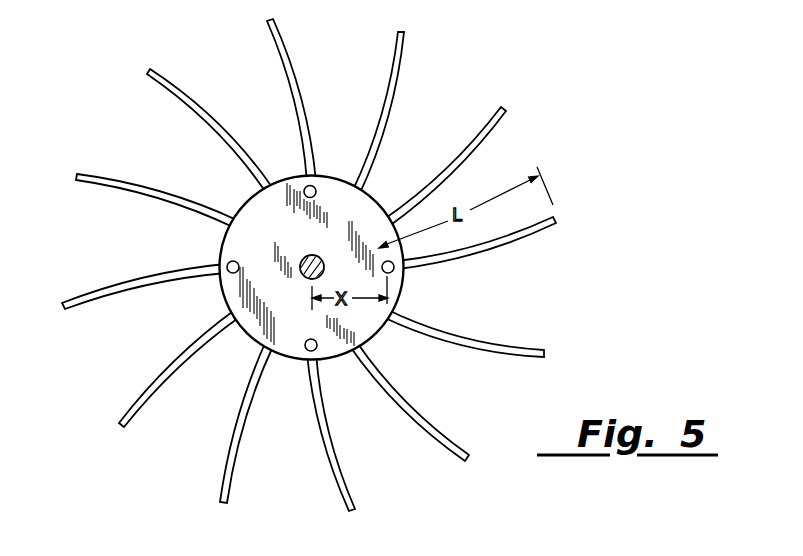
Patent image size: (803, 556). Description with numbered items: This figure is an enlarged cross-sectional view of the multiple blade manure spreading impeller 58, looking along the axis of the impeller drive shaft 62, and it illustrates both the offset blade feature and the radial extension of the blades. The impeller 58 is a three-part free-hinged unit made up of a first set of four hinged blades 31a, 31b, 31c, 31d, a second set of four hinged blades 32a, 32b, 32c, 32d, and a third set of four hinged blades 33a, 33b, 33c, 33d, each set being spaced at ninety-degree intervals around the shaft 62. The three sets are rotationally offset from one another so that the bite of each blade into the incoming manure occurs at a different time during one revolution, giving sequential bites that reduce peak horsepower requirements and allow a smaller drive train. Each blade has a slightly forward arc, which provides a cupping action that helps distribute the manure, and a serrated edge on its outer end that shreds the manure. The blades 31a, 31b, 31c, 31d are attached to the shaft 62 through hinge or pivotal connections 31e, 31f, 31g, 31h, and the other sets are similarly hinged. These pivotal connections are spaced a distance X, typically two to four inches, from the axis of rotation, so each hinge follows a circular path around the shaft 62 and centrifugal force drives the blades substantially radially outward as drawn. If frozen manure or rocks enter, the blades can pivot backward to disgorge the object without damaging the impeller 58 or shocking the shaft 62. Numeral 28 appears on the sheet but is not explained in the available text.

The hinged blade of first set 31a is at (277, 28).
The hinged blade of second set 32a is at (159, 72).
The hinged blade of third set 33a is at (112, 174).
The hinged blade of first set 31b is at (87, 288).
The hinged blade of second set 32b is at (126, 410).
The hinged blade of third set 33b is at (222, 476).
The hinged blade of first set 31c is at (335, 483).
The hinged blade of second set 32c is at (447, 456).
The hinged blade of third set 33c is at (518, 360).
The hinged blade of first set 31d is at (543, 224).
The hinged blade of second set 32d is at (505, 117).
The hinged blade of third set 33d is at (406, 54).
The hinge or pivotal connection 31e is at (317, 188).
The hinge or pivotal connection 31f is at (229, 262).
The hinge or pivotal connection 31g is at (305, 349).
The hinge or pivotal connection 31h is at (404, 281).
The impeller drive shaft 62 is at (305, 256).
The manure spreading impeller 58 is at (567, 20).
The element 28 is at (612, 8).